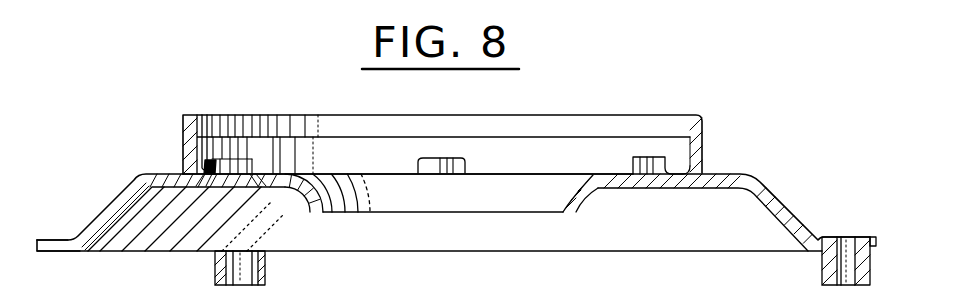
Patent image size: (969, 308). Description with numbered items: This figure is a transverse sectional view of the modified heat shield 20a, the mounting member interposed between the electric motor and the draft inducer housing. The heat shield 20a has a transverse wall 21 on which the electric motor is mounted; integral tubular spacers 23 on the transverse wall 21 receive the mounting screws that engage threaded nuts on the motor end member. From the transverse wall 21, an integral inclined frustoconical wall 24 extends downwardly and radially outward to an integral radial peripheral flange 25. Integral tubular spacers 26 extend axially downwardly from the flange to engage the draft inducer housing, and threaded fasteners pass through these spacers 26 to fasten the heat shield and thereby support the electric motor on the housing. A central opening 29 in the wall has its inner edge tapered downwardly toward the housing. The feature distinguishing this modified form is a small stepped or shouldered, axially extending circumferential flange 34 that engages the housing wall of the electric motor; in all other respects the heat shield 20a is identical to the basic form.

The modified heat shield 20a is at (748, 162).
The transverse wall 21 is at (157, 172).
The integral tubular spacers 23 is at (240, 160).
The inclined frustoconical wall 24 is at (783, 213).
The radial peripheral flange 25 is at (59, 240).
The integral tubular spacers 26 is at (267, 277).
The central opening 29 is at (508, 193).
The circumferential flange 34 is at (703, 136).